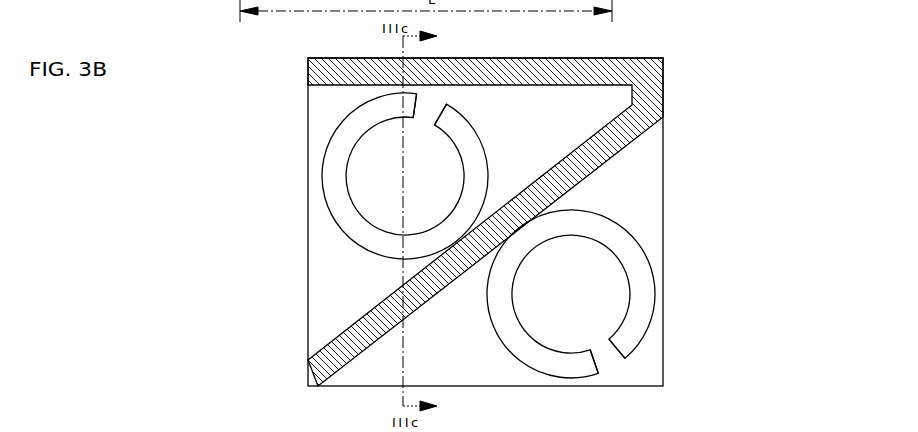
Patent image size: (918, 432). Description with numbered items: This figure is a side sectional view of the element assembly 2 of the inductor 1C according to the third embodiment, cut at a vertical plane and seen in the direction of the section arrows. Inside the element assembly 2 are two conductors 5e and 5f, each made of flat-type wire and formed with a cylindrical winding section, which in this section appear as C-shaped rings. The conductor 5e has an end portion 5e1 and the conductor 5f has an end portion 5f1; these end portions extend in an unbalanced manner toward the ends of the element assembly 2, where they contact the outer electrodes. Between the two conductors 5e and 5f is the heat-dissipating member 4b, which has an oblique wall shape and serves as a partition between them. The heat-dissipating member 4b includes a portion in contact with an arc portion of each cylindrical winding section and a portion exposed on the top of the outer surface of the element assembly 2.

The element assembly 2 is at (322, 272).
The heat-dissipating member 4b is at (603, 157).
The conductor 5e is at (333, 150).
The end portion of the conductor 5e 5e1 is at (413, 108).
The conductor 5f is at (645, 273).
The end portion of the conductor 5f 5f1 is at (591, 366).
The inductor 1C is at (860, 431).